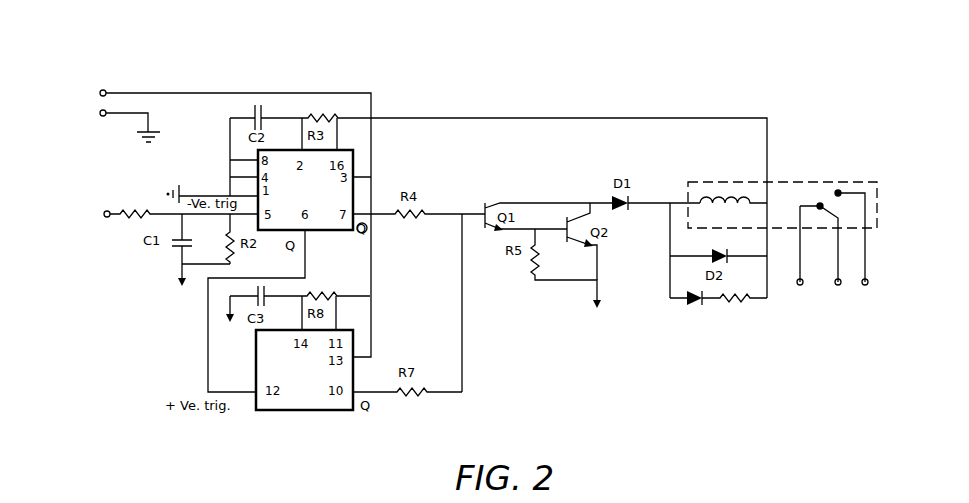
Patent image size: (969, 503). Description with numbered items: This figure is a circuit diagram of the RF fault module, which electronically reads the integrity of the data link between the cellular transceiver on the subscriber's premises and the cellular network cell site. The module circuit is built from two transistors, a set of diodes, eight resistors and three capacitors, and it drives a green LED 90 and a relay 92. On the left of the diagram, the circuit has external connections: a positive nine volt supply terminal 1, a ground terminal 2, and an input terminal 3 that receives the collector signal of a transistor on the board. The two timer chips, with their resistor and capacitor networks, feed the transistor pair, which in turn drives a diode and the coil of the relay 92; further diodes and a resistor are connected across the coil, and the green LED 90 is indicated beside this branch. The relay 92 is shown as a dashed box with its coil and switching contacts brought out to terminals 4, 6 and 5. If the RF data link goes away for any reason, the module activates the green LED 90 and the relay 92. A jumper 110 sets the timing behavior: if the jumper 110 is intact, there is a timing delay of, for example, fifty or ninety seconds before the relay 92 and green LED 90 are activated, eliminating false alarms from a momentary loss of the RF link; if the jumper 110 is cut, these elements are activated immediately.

The +9V supply terminal 1 is at (214, 213).
The ground terminal 2 is at (95, 117).
The Q17 collector input terminal 3 is at (143, 222).
The relay terminal 4 is at (800, 291).
The relay terminal 5 is at (865, 291).
The relay terminal 6 is at (838, 291).
The green LED 90 is at (698, 360).
The relay 92 is at (822, 104).
The jumper 110 is at (462, 343).